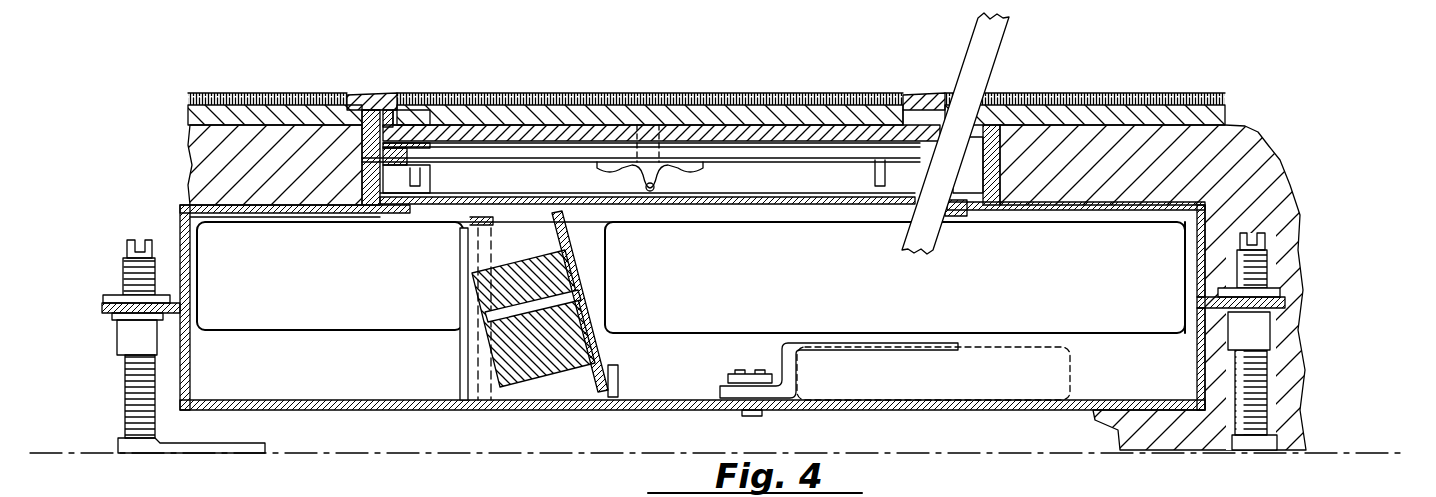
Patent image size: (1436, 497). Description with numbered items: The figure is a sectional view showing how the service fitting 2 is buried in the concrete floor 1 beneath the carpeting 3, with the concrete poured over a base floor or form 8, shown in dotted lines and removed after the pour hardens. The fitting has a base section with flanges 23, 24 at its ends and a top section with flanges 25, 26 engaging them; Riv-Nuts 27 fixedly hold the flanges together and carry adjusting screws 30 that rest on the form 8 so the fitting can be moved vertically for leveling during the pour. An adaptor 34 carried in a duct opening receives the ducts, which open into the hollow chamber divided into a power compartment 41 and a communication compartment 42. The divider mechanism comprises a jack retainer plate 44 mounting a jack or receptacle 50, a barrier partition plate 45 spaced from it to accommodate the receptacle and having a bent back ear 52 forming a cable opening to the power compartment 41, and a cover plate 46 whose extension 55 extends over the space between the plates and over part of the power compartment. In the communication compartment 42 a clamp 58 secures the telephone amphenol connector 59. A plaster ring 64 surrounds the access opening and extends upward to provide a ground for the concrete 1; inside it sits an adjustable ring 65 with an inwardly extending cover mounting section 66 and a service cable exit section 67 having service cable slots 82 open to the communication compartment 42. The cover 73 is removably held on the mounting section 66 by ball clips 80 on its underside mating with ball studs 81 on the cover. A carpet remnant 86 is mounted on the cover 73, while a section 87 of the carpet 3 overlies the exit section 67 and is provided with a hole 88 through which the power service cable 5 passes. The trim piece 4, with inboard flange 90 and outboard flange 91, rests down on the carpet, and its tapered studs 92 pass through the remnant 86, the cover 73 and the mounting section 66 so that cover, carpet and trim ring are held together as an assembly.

The concrete floor 1 is at (1264, 131).
The service fitting 2 is at (1212, 213).
The carpeting 3 is at (1130, 98).
The trim piece 4 is at (690, 98).
The power service cable 5 is at (990, 50).
The base floor or form 8 is at (1345, 450).
The flange 23 is at (1290, 305).
The flange 24 is at (100, 309).
The flange 25 is at (1300, 286).
The flange 26 is at (102, 303).
The Riv-Nut 27 is at (135, 336).
The adjusting screw 30 is at (128, 396).
The adaptor 34 is at (696, 372).
The power compartment 41 is at (270, 376).
The communication compartment 42 is at (1148, 376).
The jack retainer plate 44 is at (603, 386).
The barrier partition plate 45 is at (461, 397).
The cover plate 46 is at (618, 388).
The jack or receptacle 50 is at (536, 307).
The bent back ear 52 is at (462, 302).
The extension 55 is at (522, 207).
The clamp 58 is at (945, 345).
The telephone amphenol connector 59 is at (1040, 345).
The plaster ring 64 is at (358, 167).
The adjustable ring 65 is at (372, 190).
The cover mounting section 66 is at (780, 165).
The service cable exit section 67 is at (1030, 98).
The cover 73 is at (612, 135).
The ball clip 80 is at (672, 172).
The ball stud 81 is at (648, 192).
The service cable slot 82 is at (941, 165).
The remnant 86 is at (568, 108).
The carpet section 87 is at (910, 93).
The hole 88 is at (940, 92).
The inboard flange 90 is at (410, 100).
The outboard flange 91 is at (367, 92).
The tapered stud 92 is at (413, 180).